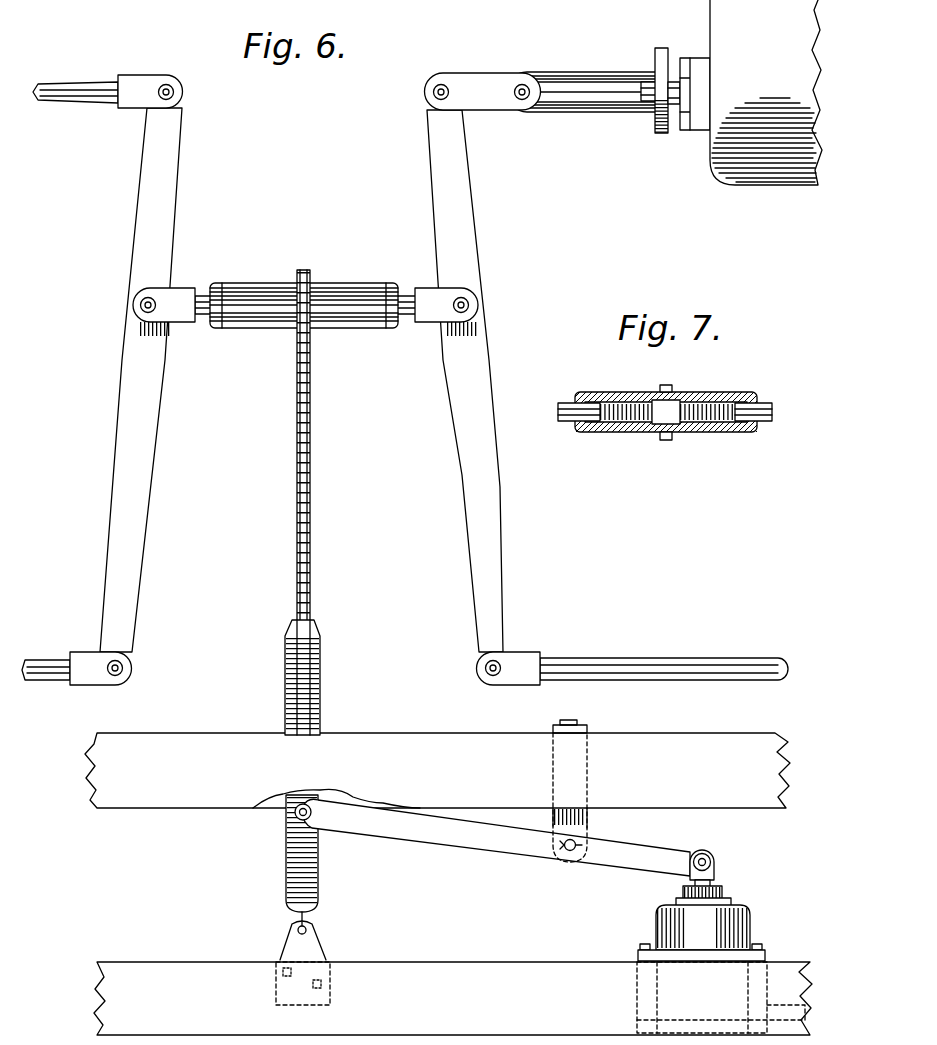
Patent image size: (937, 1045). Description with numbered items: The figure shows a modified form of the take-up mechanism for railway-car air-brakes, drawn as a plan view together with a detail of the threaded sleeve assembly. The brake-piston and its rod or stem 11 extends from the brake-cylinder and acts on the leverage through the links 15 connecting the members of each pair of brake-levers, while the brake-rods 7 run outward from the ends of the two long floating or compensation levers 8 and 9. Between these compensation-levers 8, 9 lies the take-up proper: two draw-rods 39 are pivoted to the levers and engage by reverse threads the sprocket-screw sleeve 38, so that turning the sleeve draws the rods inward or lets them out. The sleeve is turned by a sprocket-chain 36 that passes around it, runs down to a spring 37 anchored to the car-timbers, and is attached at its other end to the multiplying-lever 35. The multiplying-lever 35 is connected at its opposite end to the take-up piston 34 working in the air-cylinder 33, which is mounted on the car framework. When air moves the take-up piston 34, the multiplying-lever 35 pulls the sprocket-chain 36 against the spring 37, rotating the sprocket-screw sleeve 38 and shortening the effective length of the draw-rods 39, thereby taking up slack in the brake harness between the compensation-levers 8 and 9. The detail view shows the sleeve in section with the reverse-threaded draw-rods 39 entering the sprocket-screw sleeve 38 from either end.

In FIG. 6, the brake-rods 7 is at (42, 665).
In FIG. 6, the floating lever 8 is at (462, 475).
In FIG. 6, the floating lever 9 is at (157, 440).
In FIG. 6, the brake-piston and its rod or stem 11 is at (583, 73).
In FIG. 6, the links 15 is at (484, 112).
In FIG. 6, the air-cylinder 33 is at (750, 915).
In FIG. 6, the take-up piston 34 is at (714, 866).
In FIG. 6, the multiplying-lever 35 is at (443, 845).
In FIG. 6, the sprocket-chain 36 is at (311, 600).
In FIG. 6, the spring 37 is at (286, 878).
In FIG. 6, the sprocket-screw sleeve 38 is at (354, 320).
In FIG. 7, the sprocket-screw sleeve 38 is at (646, 384).
In FIG. 6, the draw-rods 39 is at (214, 291).
In FIG. 7, the draw-rods 39 is at (566, 407).